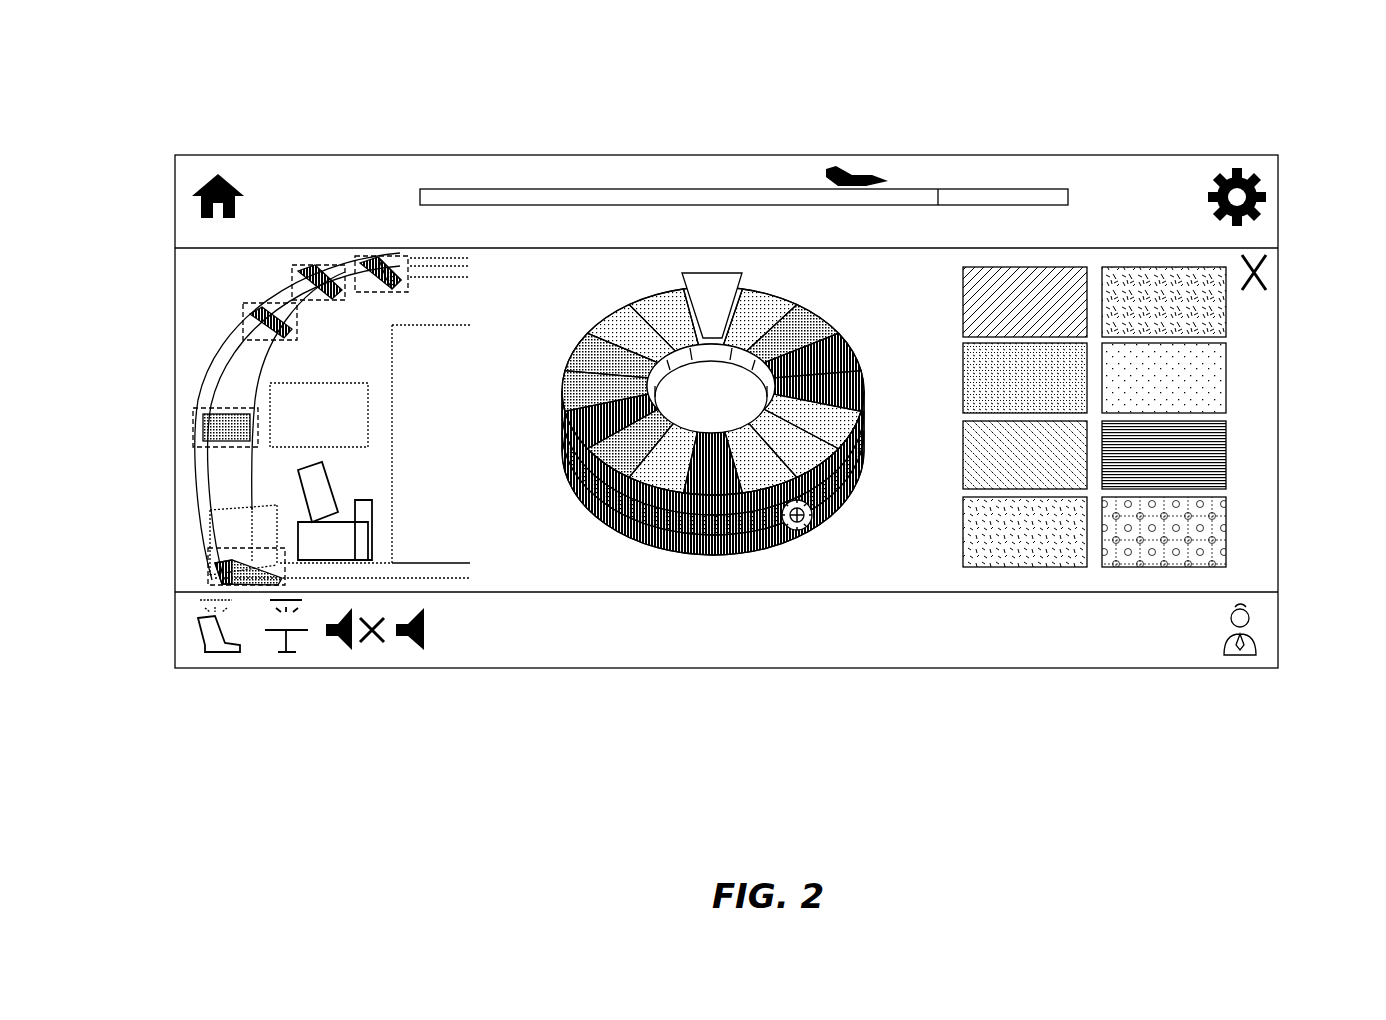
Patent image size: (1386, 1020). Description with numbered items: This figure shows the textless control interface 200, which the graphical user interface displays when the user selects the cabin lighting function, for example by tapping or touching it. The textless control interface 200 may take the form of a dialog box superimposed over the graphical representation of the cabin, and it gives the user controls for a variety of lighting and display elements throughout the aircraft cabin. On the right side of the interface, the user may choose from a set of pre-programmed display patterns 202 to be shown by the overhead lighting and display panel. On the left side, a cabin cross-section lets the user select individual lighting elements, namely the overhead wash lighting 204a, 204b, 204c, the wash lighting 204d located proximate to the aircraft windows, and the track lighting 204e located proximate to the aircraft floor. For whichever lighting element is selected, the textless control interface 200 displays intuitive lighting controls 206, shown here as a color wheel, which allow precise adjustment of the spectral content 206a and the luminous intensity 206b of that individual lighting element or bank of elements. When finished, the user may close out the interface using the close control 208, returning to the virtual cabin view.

The textless control interface 200 is at (122, 99).
The pre-programmed display patterns 202 is at (1200, 370).
The overhead wash lighting 204a is at (383, 252).
The overhead wash lighting 204b is at (318, 267).
The overhead wash lighting 204c is at (248, 322).
The wash lighting proximate to the aircraft windows 204d is at (196, 425).
The track lighting proximate to the aircraft floor 204e is at (210, 575).
The lighting controls 206 is at (621, 262).
The spectral content adjustment 206a is at (575, 465).
The luminous intensity adjustment 206b is at (800, 532).
The close out control 208 is at (1268, 278).